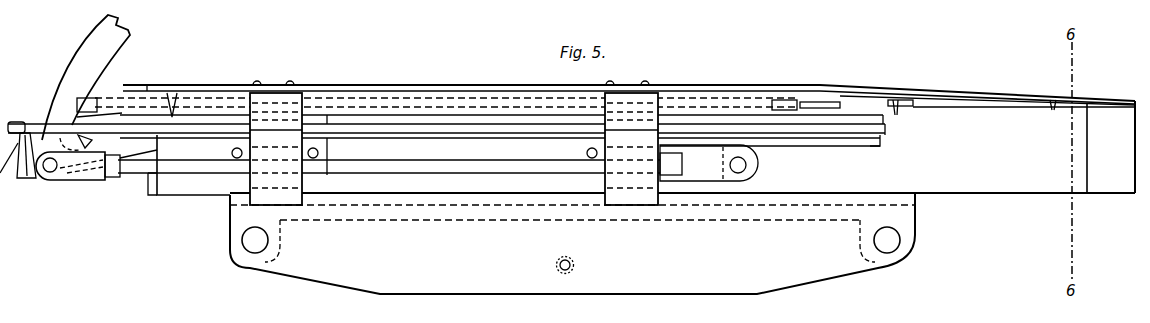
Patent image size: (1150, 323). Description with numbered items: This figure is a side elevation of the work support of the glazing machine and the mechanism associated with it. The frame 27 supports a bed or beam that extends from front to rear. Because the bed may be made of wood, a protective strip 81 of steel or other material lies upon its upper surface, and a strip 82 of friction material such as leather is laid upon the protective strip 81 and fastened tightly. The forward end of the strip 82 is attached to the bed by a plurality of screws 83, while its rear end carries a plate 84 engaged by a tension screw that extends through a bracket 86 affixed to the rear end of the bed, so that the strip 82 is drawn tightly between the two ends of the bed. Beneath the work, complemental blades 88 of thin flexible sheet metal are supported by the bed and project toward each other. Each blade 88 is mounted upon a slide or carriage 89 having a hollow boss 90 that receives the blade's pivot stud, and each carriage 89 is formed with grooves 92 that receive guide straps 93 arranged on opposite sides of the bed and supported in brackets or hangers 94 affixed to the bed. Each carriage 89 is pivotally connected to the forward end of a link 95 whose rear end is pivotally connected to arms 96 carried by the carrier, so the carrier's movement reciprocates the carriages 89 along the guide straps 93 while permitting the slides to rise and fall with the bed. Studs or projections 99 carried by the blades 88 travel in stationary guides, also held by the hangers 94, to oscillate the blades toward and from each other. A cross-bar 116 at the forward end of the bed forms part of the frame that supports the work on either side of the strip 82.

The frame 27 is at (572, 243).
The protective strip 81 is at (900, 101).
The strip of friction material 82 is at (965, 103).
The screws 83 is at (1056, 110).
The plate 84 is at (94, 98).
The bracket 86 is at (31, 180).
The complemental blades 88 is at (835, 93).
The slide or carriage 89 is at (826, 145).
The hollow boss 90 is at (636, 99).
The grooves 92 is at (881, 139).
The guide straps 93 is at (862, 132).
The brackets or hangers 94 is at (283, 180).
The link 95 is at (415, 168).
The arms 96 is at (70, 68).
The studs or projections 99 is at (768, 96).
The cross-bar 116 is at (1115, 182).